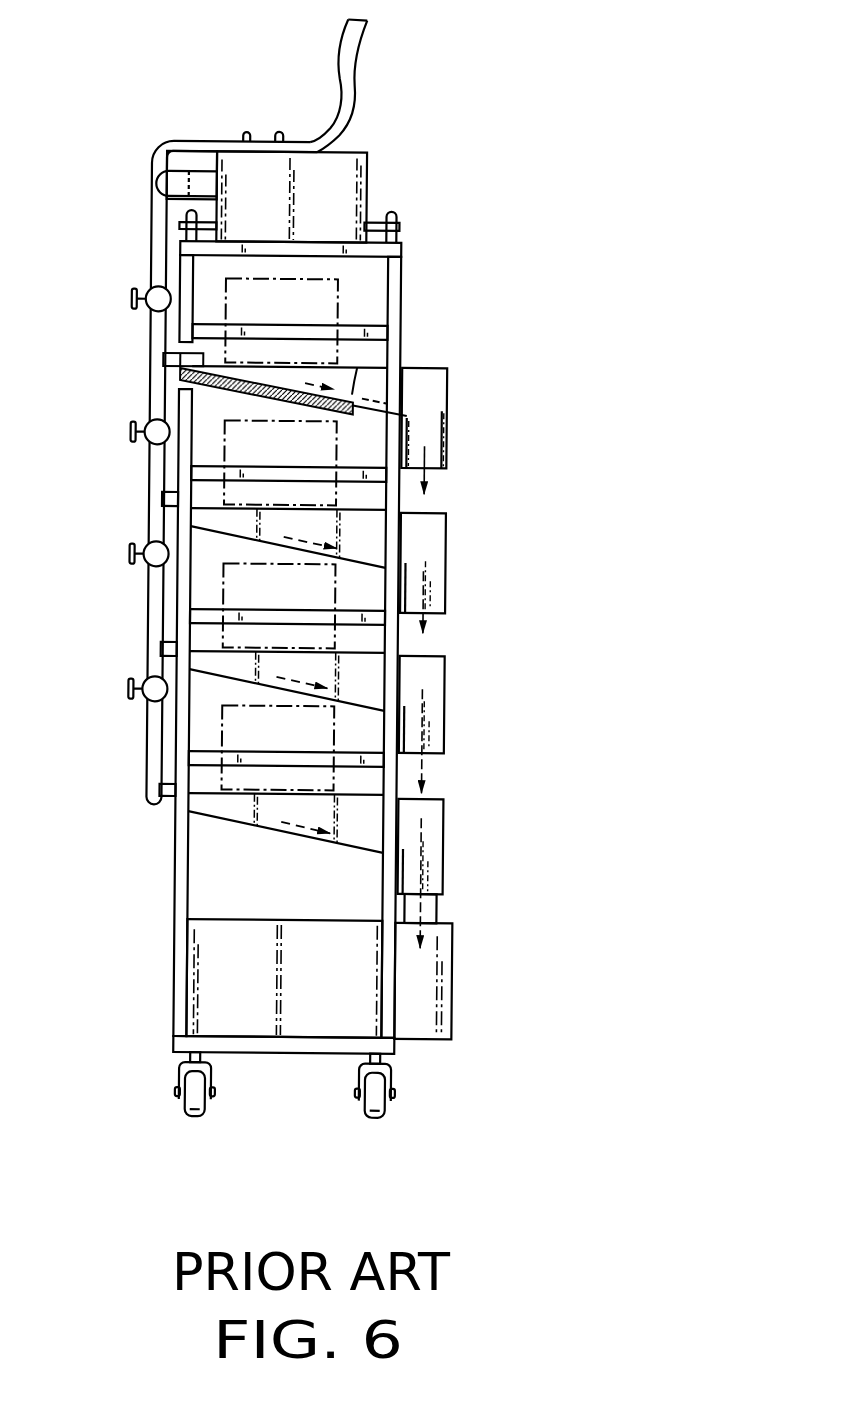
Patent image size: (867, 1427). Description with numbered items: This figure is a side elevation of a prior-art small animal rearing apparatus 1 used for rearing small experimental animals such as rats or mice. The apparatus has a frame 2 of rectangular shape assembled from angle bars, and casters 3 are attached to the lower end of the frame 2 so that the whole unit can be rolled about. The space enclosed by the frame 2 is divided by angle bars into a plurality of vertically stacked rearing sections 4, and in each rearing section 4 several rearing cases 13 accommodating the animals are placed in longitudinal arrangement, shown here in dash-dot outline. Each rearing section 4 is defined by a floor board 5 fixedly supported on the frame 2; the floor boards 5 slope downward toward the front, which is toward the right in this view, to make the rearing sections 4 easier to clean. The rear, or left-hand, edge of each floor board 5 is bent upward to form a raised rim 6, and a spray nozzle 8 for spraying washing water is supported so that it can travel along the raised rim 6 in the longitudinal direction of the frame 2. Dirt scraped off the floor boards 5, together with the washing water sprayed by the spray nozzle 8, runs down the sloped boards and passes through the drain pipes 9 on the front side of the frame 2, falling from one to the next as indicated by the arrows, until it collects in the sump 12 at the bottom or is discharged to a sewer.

The small animal rearing apparatus 1 is at (424, 183).
The frame 2 is at (404, 300).
The casters 3 is at (388, 1108).
The rearing sections 4 is at (370, 283).
The floor boards 5 is at (358, 373).
The raised rim 6 is at (180, 378).
The spray nozzle 8 is at (165, 362).
The drain pipes 9 is at (436, 450).
The sump 12 is at (420, 990).
The rearing cases 13 is at (325, 318).